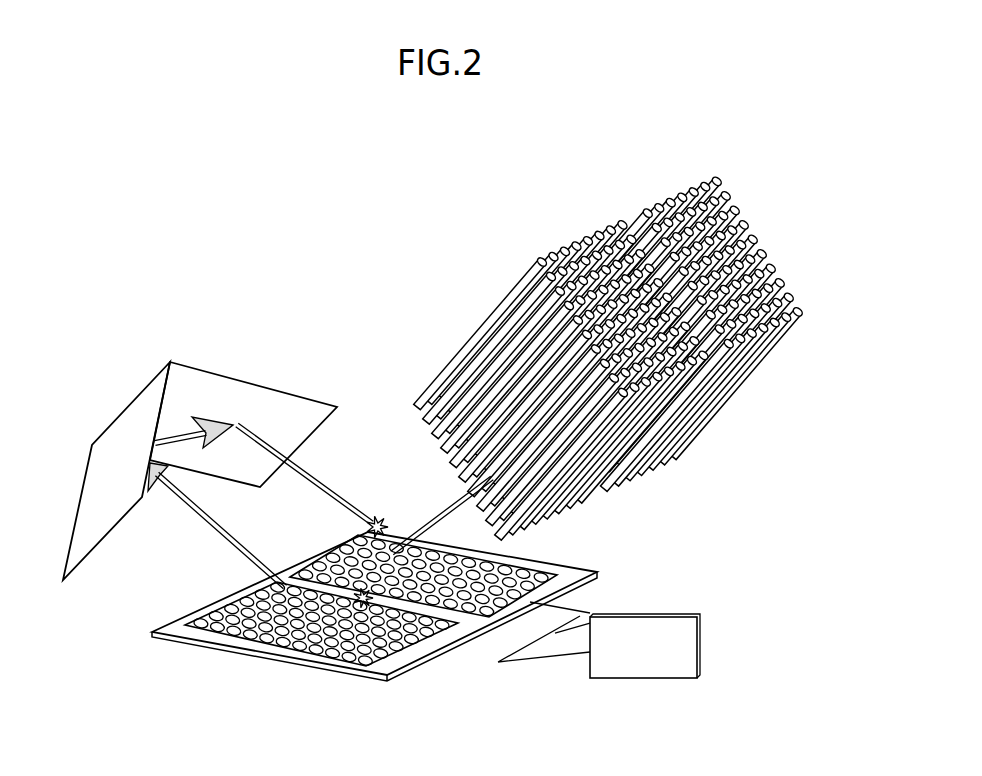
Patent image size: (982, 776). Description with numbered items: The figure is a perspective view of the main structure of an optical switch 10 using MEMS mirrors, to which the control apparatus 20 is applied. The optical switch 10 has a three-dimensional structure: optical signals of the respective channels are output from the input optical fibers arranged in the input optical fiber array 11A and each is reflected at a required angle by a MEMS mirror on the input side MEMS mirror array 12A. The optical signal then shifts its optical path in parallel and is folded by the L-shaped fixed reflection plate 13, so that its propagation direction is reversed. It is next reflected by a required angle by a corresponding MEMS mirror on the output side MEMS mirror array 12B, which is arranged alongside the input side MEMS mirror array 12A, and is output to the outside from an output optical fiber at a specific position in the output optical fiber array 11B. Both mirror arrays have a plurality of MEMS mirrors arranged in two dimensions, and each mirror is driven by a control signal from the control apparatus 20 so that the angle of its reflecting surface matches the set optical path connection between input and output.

The optical switch 10 is at (244, 263).
The input optical fiber array 11A is at (490, 265).
The output optical fiber array 11B is at (786, 228).
The input side MEMS mirror array 12A is at (200, 588).
The output side MEMS mirror array 12B is at (294, 542).
The L-shaped fixed reflection plate 13 is at (233, 378).
The control apparatus 20 is at (671, 615).